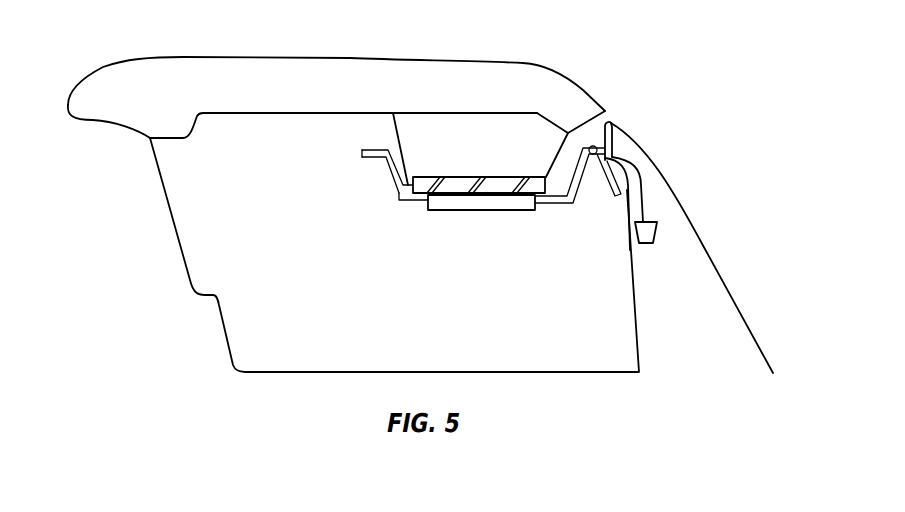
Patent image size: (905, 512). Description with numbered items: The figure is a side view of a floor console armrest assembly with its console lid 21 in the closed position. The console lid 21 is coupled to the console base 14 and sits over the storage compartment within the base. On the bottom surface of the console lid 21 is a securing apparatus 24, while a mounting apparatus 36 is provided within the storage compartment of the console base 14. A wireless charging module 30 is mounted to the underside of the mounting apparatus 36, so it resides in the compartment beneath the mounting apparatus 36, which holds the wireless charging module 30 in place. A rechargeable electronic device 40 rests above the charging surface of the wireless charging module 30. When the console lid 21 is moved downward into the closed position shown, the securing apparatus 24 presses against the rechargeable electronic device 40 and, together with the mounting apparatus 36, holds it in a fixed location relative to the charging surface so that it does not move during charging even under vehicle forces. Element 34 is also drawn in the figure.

The console base 14 is at (428, 333).
The console lid 21 is at (289, 97).
The securing apparatus 24 is at (537, 142).
The wireless charging module 30 is at (462, 238).
The attachment clip 34 is at (693, 167).
The mounting apparatus 36 is at (362, 153).
The rechargeable electronic device 40 is at (413, 236).